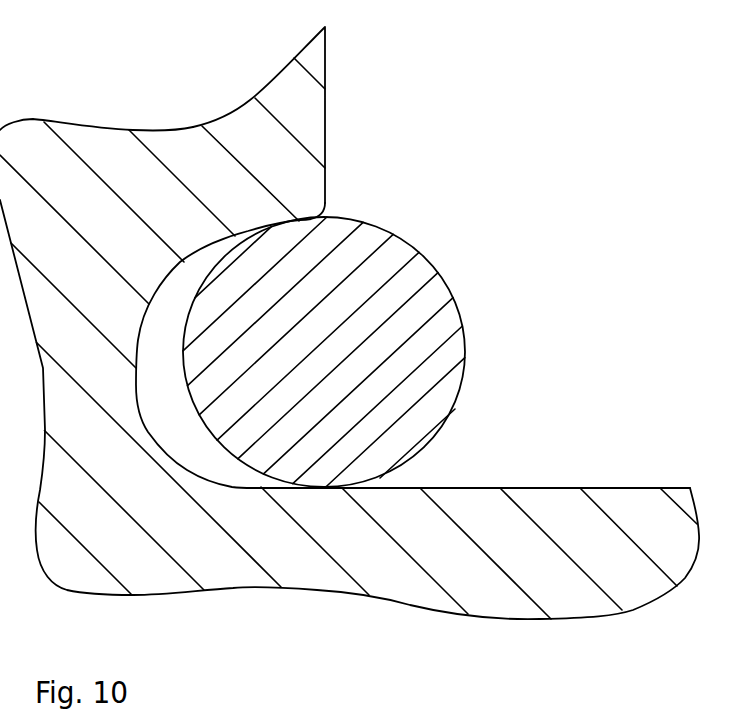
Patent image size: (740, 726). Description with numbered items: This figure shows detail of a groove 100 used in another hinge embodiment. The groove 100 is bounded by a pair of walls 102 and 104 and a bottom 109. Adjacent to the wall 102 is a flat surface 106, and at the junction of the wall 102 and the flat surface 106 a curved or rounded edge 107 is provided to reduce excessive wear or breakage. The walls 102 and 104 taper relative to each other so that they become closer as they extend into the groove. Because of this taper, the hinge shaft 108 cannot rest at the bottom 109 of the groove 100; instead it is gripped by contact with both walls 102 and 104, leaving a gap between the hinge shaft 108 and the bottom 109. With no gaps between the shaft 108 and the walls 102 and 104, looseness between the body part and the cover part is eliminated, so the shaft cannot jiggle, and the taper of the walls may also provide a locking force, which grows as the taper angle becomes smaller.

The groove 100 is at (412, 207).
The wall 102 is at (247, 232).
The wall 104 is at (387, 490).
The flat surface 106 is at (326, 143).
The curved or rounded edge 107 is at (314, 213).
The hinge shaft 108 is at (460, 311).
The bottom 109 is at (137, 338).